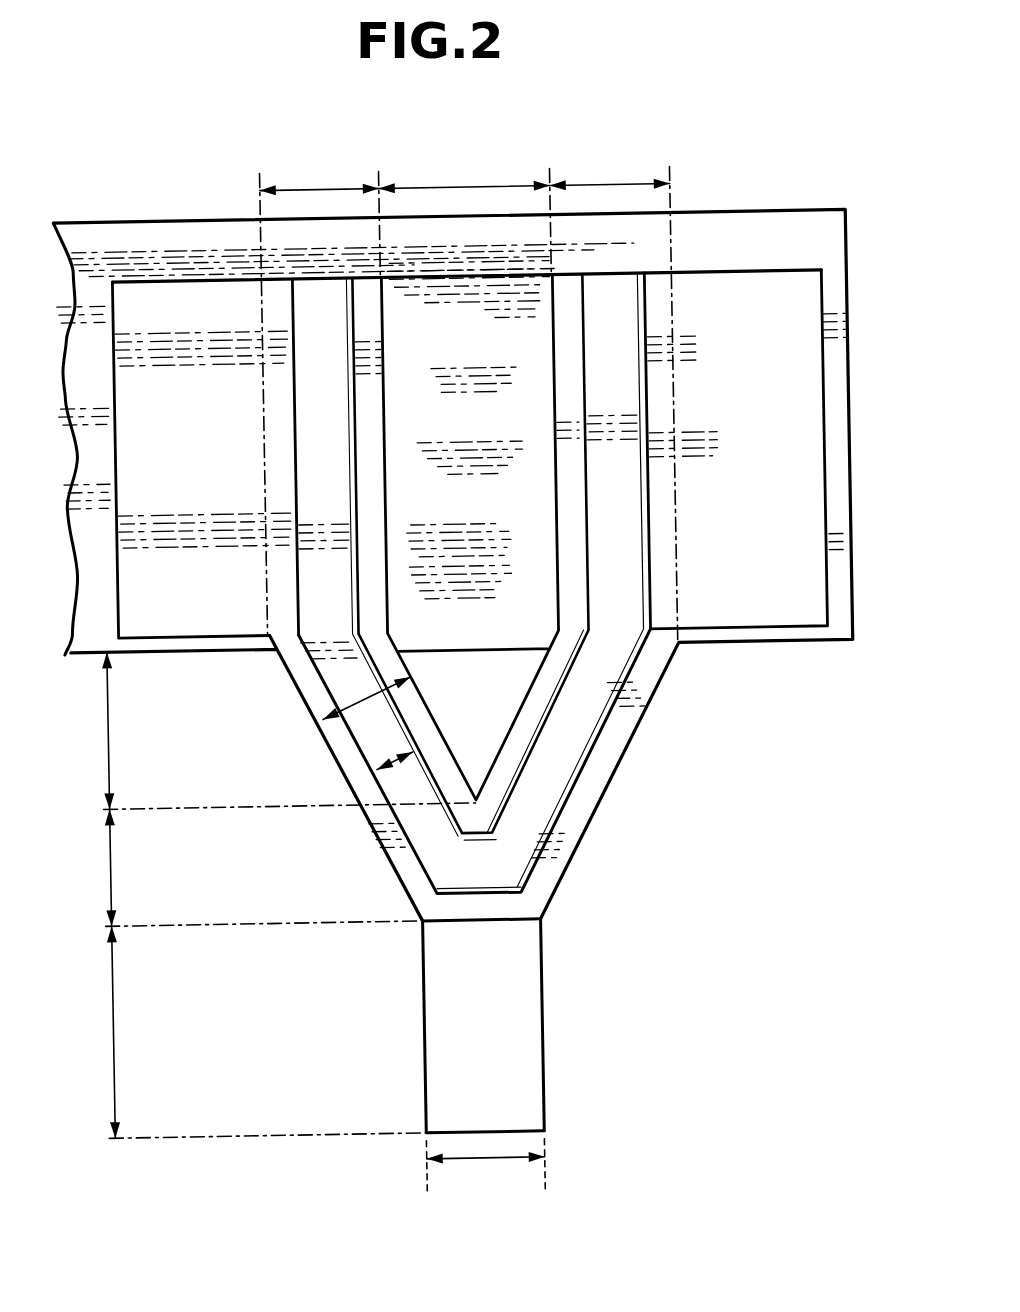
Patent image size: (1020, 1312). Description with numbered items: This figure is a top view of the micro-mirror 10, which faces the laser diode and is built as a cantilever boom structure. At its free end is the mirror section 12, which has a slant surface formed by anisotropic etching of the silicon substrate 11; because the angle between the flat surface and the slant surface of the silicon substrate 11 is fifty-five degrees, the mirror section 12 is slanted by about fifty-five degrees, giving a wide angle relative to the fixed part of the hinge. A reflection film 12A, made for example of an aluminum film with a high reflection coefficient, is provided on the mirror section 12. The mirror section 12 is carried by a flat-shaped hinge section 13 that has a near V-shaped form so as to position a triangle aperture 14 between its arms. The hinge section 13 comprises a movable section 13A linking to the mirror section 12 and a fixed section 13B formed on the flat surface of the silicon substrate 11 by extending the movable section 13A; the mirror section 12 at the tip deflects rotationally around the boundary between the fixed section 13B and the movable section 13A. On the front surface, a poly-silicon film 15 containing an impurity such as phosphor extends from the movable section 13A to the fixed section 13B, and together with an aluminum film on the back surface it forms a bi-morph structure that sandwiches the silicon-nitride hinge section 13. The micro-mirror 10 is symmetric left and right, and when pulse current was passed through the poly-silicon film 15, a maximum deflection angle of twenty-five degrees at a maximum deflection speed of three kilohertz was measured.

The micro-mirror 10 is at (708, 252).
The silicon substrate 11 is at (763, 245).
The mirror section 12 is at (537, 1026).
The reflection film 12A is at (534, 968).
The hinge section 13 is at (469, 503).
The movable section 13A is at (543, 558).
The fixed section 13B is at (157, 300).
The triangle aperture 14 is at (492, 708).
The poly-silicon film 15 is at (530, 845).